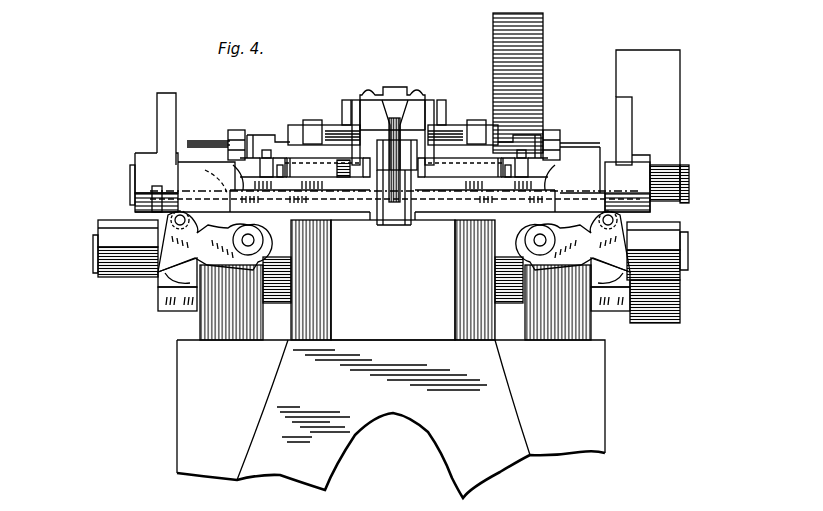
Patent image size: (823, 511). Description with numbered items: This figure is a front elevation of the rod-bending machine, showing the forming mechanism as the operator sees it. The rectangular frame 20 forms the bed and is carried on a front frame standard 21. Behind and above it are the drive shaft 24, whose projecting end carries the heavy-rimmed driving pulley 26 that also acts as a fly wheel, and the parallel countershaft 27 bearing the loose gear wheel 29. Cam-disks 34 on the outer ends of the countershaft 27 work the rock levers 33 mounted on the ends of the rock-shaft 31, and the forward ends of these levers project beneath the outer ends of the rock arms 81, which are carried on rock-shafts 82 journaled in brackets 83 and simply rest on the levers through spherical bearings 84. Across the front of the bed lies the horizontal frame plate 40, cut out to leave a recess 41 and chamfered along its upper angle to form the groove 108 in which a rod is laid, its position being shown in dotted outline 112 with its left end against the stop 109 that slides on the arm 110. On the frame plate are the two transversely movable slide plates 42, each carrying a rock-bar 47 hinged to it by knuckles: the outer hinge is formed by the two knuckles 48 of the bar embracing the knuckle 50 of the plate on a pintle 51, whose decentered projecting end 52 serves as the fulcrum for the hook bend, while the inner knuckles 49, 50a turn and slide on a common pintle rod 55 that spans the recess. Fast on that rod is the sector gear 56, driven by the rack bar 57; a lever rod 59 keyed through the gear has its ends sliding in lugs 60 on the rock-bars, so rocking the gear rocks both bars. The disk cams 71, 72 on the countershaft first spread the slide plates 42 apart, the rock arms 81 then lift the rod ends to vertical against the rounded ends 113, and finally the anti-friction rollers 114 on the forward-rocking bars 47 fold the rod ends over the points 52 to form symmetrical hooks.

The rectangular frame 20 is at (196, 338).
The frame standard 21 is at (383, 410).
The drive shaft 24 is at (692, 172).
The driving pulley 26 is at (672, 90).
The countershaft 27 is at (653, 168).
The loose gear wheel 29 is at (545, 47).
The rock-shaft 31 is at (96, 253).
The rock lever 33 is at (182, 326).
The cam-disk 34 is at (156, 103).
The frame plate 40 is at (372, 220).
The recess 41 is at (390, 222).
The slide plate 42 is at (478, 190).
The rock-bar 47 is at (286, 140).
The knuckle 48 is at (266, 163).
The knuckle 49 is at (373, 162).
The knuckle 50 is at (528, 152).
The knuckle 50a is at (358, 164).
The pintle 51 is at (292, 168).
The projecting end of pintle 52 is at (236, 152).
The common pintle rod 55 is at (456, 178).
The sector gear 56 is at (404, 120).
The rack bar 57 is at (402, 100).
The lever rod 59 is at (454, 147).
The lug 60 is at (486, 116).
The disk cam 71 is at (450, 128).
The disk cam 72 is at (314, 122).
The rock arm 81 is at (200, 240).
The rock-shaft 82 is at (250, 240).
The bracket 83 is at (280, 265).
The spherical bearing 84 is at (160, 290).
The groove 108 is at (446, 205).
The stop 109 is at (154, 182).
The arm 110 is at (192, 204).
The rod in dotted outline 112 is at (206, 166).
The rounded end of slide bar 113 is at (408, 170).
The anti-friction roller 114 is at (238, 130).